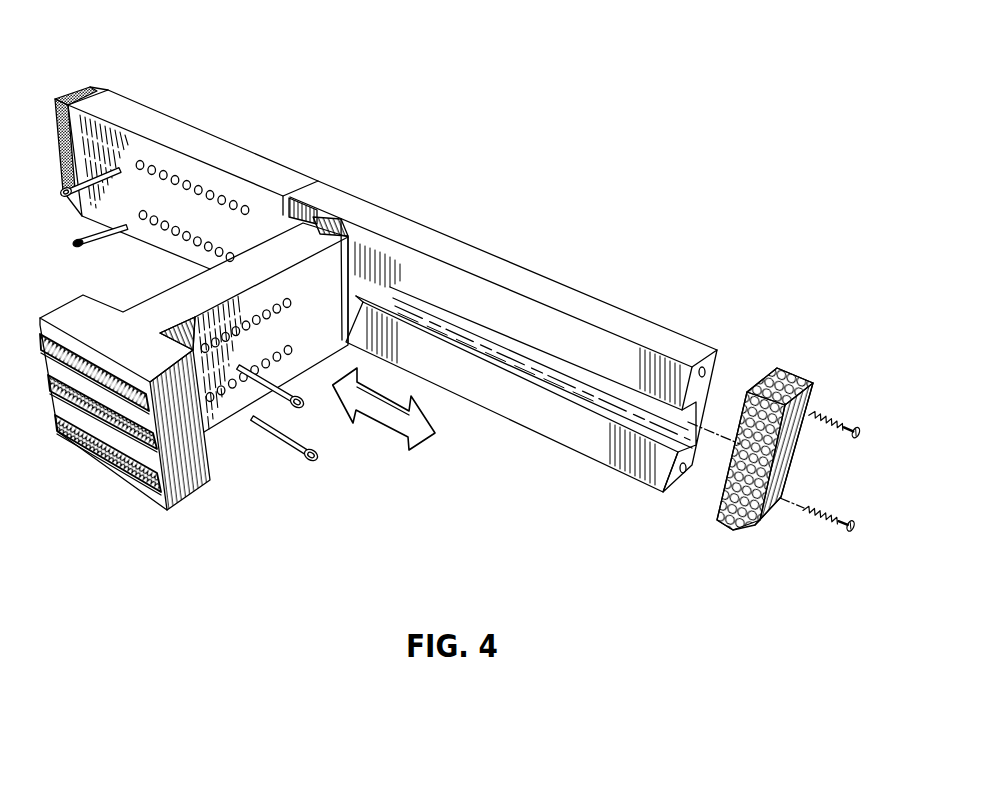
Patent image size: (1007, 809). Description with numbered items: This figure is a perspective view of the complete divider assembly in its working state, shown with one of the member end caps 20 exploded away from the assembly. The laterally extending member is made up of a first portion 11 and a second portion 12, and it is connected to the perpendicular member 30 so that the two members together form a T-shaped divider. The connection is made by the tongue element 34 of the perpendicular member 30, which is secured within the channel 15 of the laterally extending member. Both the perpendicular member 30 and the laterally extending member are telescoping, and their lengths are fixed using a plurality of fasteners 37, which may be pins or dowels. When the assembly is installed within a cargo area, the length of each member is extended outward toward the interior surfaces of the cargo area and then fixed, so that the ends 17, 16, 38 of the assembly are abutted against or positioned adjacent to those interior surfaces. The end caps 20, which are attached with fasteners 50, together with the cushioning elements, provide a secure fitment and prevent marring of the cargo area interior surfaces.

The first portion 11 is at (243, 85).
The second portion 12 is at (514, 376).
The channel 15 is at (441, 317).
The end 16 is at (92, 92).
The end 17 is at (677, 481).
The end cap 20 is at (60, 95).
The perpendicular member 30 is at (194, 431).
The tongue element 34 is at (363, 285).
The fasteners 37 is at (78, 197).
The end 38 is at (122, 452).
The fastener 50 is at (815, 413).